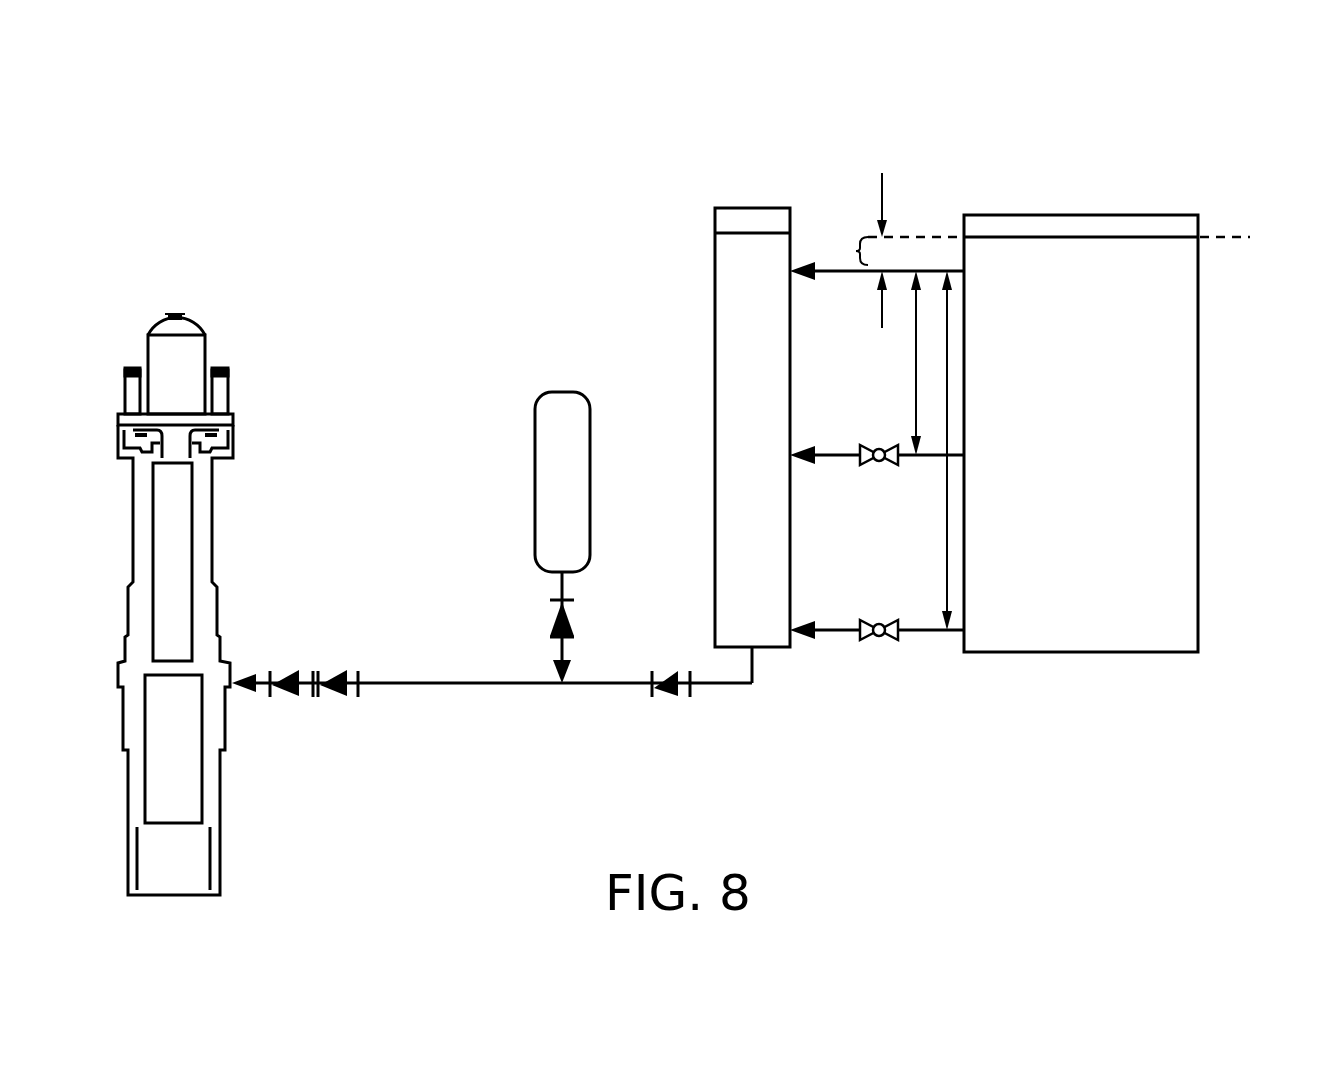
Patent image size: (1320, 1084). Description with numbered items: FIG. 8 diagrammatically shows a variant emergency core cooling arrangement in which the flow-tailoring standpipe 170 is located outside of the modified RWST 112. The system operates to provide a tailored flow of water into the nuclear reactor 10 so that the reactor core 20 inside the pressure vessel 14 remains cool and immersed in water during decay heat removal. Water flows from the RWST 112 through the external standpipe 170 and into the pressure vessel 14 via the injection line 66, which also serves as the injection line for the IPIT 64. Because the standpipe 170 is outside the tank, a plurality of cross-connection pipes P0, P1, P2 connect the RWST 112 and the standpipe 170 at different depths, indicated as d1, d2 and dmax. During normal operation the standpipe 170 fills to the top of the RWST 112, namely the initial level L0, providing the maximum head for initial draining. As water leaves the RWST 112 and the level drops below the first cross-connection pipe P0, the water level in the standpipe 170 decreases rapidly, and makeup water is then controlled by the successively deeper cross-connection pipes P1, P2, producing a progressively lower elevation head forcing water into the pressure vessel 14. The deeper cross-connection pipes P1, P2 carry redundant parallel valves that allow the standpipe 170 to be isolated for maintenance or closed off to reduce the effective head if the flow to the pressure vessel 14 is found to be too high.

The nuclear reactor 10 is at (263, 604).
The pressure vessel 14 is at (215, 565).
The reactor core 20 is at (177, 782).
The IPIT 64 is at (557, 457).
The injection line 66 is at (605, 683).
The standpipe 170 is at (778, 400).
The RWST 112 is at (1103, 393).
The first cross-connection pipe P0 is at (837, 267).
The cross-connection pipe P1 is at (830, 457).
The cross-connection pipe P2 is at (830, 633).
The initial level L0 is at (1077, 241).
The depth d1 is at (857, 250).
The distance d2 is at (915, 368).
The maximum depth dmax is at (943, 588).